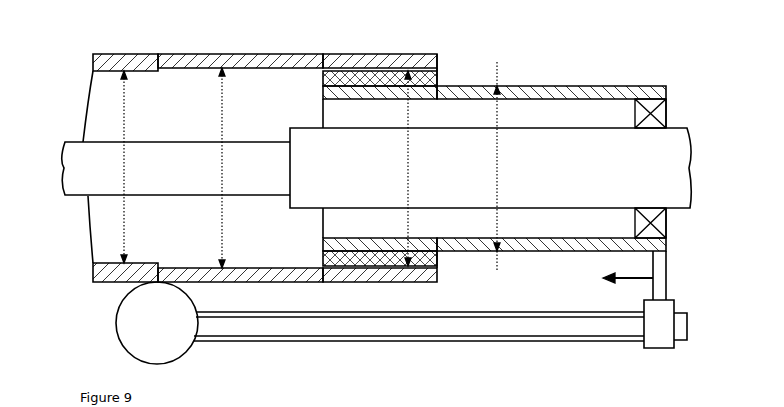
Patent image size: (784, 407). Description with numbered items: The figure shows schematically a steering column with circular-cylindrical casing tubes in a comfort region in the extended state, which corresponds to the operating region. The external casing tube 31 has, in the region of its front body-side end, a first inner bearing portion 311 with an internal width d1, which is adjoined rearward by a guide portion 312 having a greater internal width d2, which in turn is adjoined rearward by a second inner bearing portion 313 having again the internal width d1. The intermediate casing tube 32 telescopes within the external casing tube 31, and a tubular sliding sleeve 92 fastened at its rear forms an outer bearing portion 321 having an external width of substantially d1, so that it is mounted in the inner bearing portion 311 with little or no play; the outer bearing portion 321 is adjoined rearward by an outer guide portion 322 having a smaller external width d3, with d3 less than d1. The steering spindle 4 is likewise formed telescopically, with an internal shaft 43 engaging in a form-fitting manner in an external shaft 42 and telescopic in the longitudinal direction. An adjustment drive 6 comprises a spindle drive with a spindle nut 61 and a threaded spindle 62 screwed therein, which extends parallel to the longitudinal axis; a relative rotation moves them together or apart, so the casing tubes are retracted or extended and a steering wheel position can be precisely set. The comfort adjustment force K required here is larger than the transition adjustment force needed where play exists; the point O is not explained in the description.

The external casing tube 31 is at (260, 147).
The first inner bearing portion 311 is at (118, 54).
The guide portion 312 is at (232, 54).
The second inner bearing portion 313 is at (389, 54).
The intermediate casing tube 32 is at (485, 160).
The outer bearing portion 321 is at (323, 68).
The outer guide portion 322 is at (562, 86).
The sliding sleeve 92 is at (368, 62).
The reference point O is at (438, 54).
The internal width d1 is at (122, 117).
The internal width of guide portion d2 is at (220, 107).
The external width of outer guide portion d3 is at (499, 75).
The steering spindle 4 is at (380, 168).
The external shaft 42 is at (674, 184).
The internal shaft 43 is at (88, 172).
The adjustment drive 6 is at (152, 327).
The threaded spindle 62 is at (443, 327).
The spindle nut 61 is at (658, 333).
The comfort adjustment force K is at (622, 280).